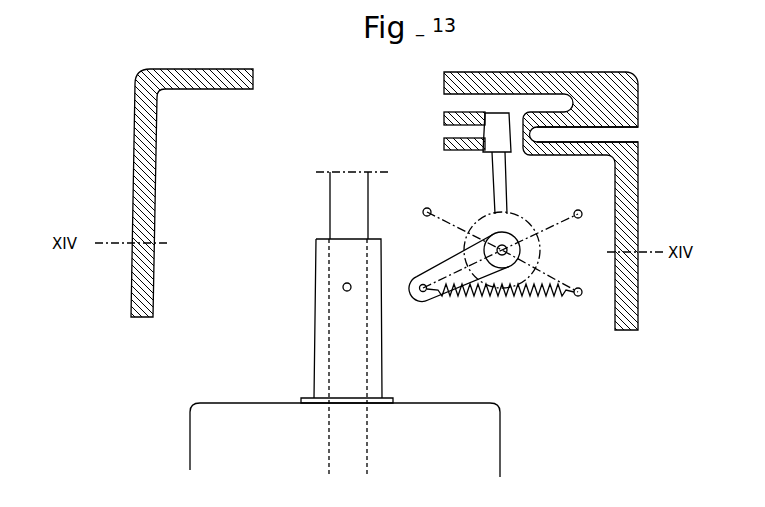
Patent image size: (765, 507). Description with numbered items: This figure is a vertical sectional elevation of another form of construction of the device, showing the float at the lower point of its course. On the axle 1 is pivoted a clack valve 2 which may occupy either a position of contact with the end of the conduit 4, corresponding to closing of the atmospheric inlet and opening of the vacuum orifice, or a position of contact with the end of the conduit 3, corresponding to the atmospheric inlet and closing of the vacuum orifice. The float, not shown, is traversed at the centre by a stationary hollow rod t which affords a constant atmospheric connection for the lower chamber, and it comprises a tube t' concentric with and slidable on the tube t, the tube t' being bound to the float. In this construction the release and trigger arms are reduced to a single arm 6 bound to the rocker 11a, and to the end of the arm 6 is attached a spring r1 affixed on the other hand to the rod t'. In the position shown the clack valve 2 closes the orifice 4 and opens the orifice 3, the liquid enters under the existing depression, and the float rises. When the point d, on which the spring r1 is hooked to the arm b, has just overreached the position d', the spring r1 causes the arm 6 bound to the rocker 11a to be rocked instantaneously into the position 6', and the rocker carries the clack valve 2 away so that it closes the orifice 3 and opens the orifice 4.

The axle 1 is at (509, 251).
The clack valve 2 is at (497, 163).
The conduit 3 is at (546, 133).
The conduit 4 is at (462, 131).
The arm 6 is at (459, 285).
The arm 6' is at (414, 205).
The rocker 11a is at (513, 214).
The point d is at (589, 303).
The position d' is at (591, 205).
The spring r1 is at (513, 292).
The hollow rod t is at (339, 205).
The tube t' is at (339, 357).
The arm b is at (343, 287).